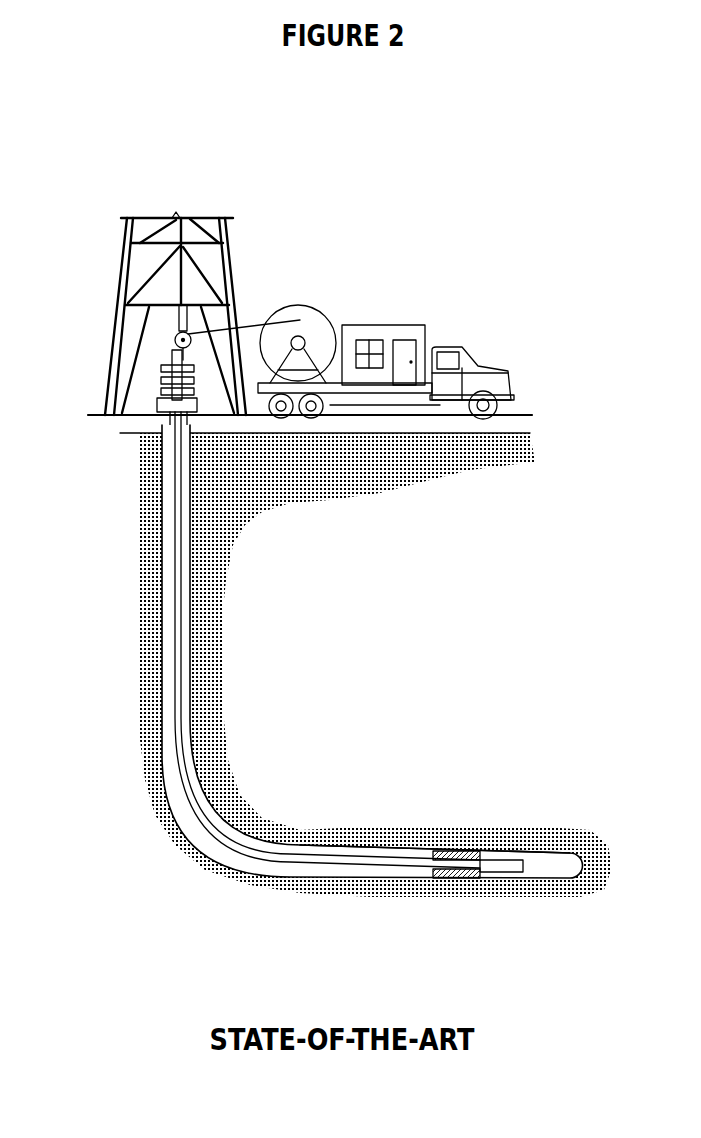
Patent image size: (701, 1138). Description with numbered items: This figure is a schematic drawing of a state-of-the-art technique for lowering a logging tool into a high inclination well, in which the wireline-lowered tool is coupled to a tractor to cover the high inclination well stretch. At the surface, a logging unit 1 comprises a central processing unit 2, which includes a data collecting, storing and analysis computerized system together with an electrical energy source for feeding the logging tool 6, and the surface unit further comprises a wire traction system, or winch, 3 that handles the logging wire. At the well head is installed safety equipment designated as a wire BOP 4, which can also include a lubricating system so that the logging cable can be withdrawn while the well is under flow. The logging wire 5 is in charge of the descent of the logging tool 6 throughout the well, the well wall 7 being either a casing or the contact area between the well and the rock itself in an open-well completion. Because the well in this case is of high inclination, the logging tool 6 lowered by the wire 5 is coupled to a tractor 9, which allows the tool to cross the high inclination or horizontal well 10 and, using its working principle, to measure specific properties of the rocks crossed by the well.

The logging unit 1 is at (513, 330).
The central processing unit 2 is at (390, 323).
The wire traction system (winch) 3 is at (318, 308).
The wire BOP 4 is at (161, 370).
The logging wire 5 is at (251, 322).
The logging tool 6 is at (503, 860).
The well wall 7 is at (162, 565).
The tractor 9 is at (435, 852).
The high inclination or horizontal well 10 is at (360, 850).